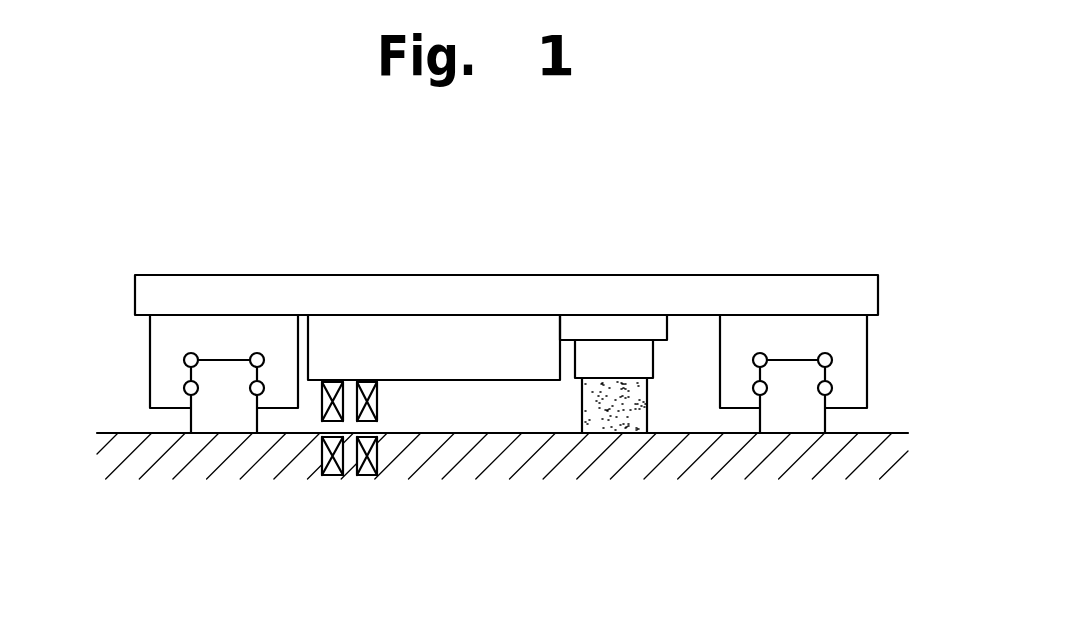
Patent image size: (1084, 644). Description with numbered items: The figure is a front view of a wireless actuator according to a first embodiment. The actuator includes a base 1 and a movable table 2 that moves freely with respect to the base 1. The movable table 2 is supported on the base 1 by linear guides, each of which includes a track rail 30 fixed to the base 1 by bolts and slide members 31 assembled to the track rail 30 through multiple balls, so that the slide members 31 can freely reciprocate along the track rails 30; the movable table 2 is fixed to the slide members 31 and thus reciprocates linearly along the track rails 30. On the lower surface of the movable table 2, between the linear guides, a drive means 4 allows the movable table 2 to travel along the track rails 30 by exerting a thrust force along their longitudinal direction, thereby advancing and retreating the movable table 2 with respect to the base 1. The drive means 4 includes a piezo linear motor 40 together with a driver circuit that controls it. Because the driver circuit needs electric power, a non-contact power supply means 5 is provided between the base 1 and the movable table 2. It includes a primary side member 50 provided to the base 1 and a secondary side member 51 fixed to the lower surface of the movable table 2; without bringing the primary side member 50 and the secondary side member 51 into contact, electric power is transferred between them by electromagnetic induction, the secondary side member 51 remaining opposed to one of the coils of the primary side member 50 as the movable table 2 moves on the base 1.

The base 1 is at (121, 430).
The movable table 2 is at (287, 273).
The drive means 4 is at (623, 303).
The piezo linear motor 40 is at (637, 358).
The slide member 31 is at (177, 332).
The track rail 30 is at (218, 413).
The non-contact power supply means 5 is at (388, 504).
The primary side member 50 is at (370, 480).
The secondary side member 51 is at (378, 400).